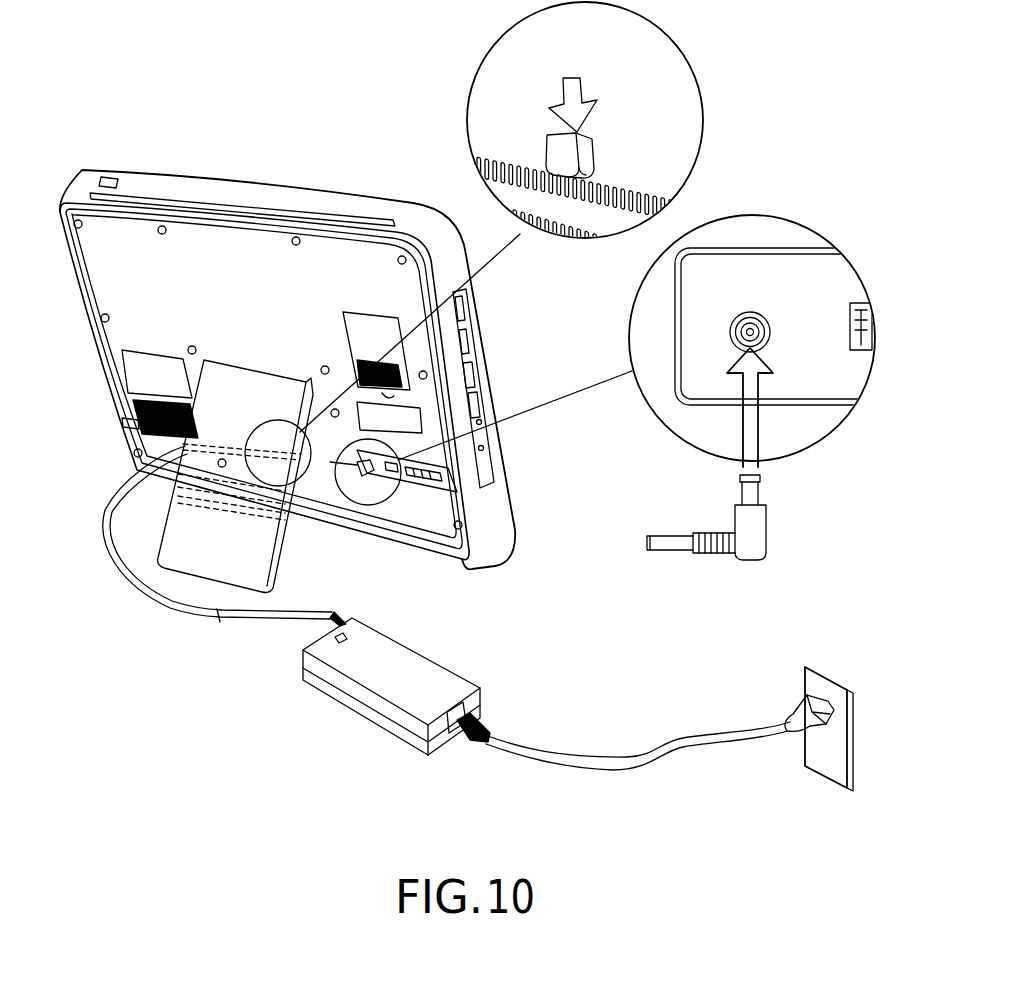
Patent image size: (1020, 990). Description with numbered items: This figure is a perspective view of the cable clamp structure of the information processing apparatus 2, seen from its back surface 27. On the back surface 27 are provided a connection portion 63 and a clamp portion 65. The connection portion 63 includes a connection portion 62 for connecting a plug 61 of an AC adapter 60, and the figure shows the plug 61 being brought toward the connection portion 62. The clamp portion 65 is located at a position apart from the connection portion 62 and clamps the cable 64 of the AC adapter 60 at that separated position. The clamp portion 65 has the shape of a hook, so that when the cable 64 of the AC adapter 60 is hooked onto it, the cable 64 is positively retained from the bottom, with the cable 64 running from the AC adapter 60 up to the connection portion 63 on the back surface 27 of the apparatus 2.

The information processing apparatus 2 is at (332, 315).
The back surface 27 is at (100, 297).
The AC adapter 60 is at (418, 668).
The plug 61 is at (750, 537).
The connection portion 62 is at (750, 313).
The connection portion 63 is at (767, 315).
The cable 64 is at (150, 597).
The clamp portion 65 is at (560, 153).